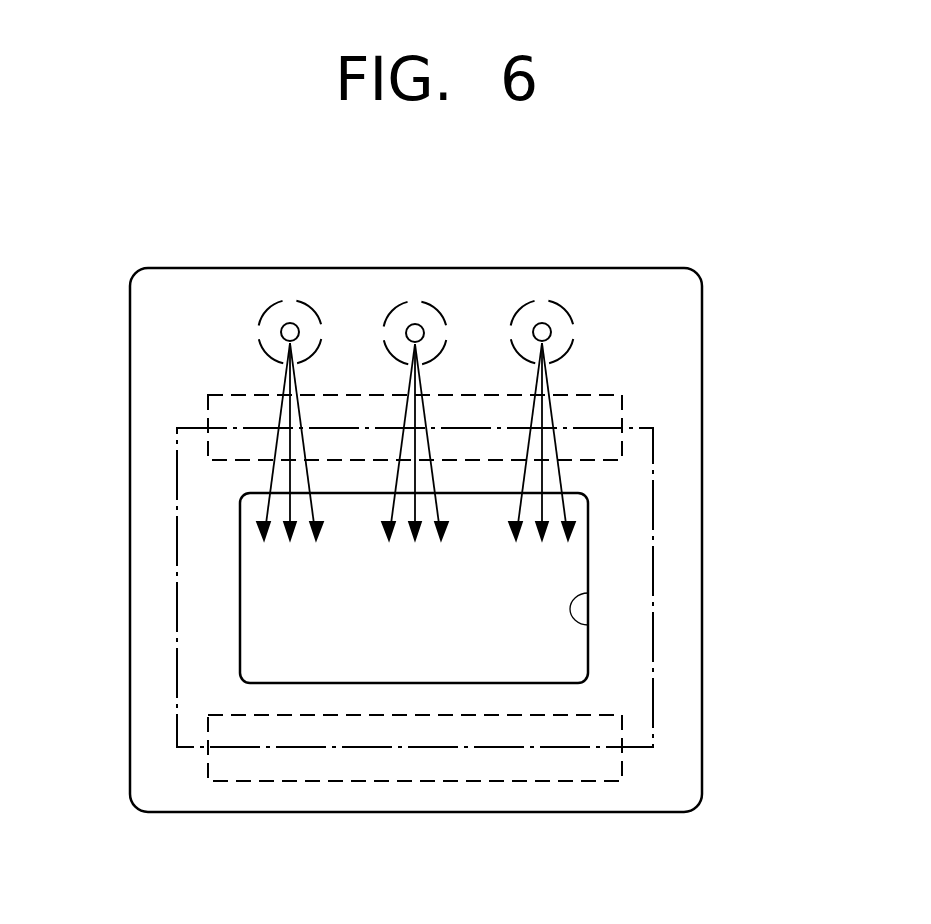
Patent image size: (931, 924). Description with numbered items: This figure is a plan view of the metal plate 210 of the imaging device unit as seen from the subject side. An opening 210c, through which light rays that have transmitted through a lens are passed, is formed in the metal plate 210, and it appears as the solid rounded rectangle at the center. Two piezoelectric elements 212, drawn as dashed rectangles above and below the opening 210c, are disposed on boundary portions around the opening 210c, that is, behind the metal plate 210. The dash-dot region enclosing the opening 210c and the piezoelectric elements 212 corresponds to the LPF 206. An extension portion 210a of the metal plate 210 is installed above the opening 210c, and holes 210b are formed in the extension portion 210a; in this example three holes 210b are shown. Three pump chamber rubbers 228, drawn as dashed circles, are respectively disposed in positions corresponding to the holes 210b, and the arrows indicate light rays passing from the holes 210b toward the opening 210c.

The LPF 206 is at (653, 513).
The metal plate 210 is at (702, 705).
The extension portion 210a is at (627, 292).
The hole 210b is at (290, 323).
The opening 210c is at (588, 625).
The piezoelectric element 212 is at (206, 410).
The pump chamber rubber 228 is at (270, 300).